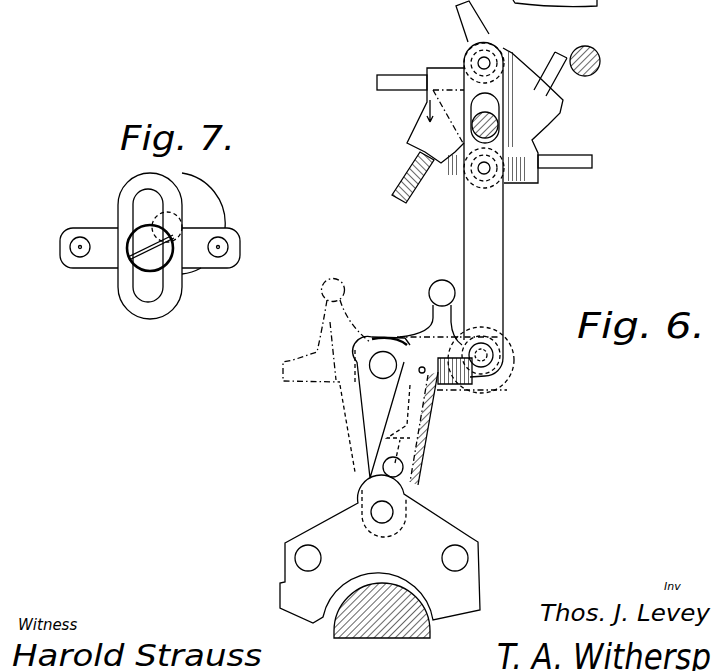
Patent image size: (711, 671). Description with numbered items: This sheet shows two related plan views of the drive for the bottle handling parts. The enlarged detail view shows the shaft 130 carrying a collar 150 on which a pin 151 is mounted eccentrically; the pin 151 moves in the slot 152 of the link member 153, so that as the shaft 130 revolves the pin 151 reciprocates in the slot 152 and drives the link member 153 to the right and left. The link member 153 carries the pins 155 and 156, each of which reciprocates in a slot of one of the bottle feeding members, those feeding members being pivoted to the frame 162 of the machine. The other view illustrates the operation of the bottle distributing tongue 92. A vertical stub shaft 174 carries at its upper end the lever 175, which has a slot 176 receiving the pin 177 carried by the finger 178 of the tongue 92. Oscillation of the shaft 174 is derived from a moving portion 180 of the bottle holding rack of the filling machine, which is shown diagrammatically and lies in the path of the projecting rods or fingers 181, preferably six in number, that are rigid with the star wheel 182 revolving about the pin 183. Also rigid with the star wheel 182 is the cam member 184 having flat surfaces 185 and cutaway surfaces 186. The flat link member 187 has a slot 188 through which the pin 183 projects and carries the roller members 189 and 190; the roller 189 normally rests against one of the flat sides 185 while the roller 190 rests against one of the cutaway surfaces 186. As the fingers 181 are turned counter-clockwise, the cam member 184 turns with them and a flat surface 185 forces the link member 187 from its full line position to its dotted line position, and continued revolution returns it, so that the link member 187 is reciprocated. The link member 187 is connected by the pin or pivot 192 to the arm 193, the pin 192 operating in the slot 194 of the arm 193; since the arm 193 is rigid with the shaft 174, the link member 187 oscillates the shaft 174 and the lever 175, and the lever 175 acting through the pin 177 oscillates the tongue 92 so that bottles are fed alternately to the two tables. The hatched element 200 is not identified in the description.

In FIG. 6, the distributing tongue 92 is at (437, 302).
In FIG. 7, the shaft 130 is at (163, 222).
In FIG. 7, the collar 150 is at (200, 207).
In FIG. 7, the pin 151 is at (147, 257).
In FIG. 7, the slot 152 is at (163, 200).
In FIG. 7, the link member 153 is at (128, 207).
In FIG. 7, the pin 155 is at (80, 243).
In FIG. 7, the pin 156 is at (218, 247).
In FIG. 6, the frame 162 is at (455, 585).
In FIG. 6, the vertical stub shaft 174 is at (383, 370).
In FIG. 6, the lever 175 is at (370, 415).
In FIG. 6, the slot 176 is at (410, 443).
In FIG. 6, the pin 177 is at (402, 476).
In FIG. 6, the finger 178 is at (430, 413).
In FIG. 6, the moving portion of the bottle holding rack 180 is at (598, 52).
In FIG. 6, the projecting rods or fingers 181 is at (553, 63).
In FIG. 6, the star wheel 182 is at (535, 125).
In FIG. 6, the pin 183 is at (490, 118).
In FIG. 6, the cam member 184 is at (452, 138).
In FIG. 6, the flat surfaces 185 is at (440, 166).
In FIG. 6, the cutaway surfaces 186 is at (425, 148).
In FIG. 6, the flat link member 187 is at (483, 270).
In FIG. 6, the slot 188 is at (522, 160).
In FIG. 6, the roller member 189 is at (508, 197).
In FIG. 6, the roller member 190 is at (466, 50).
In FIG. 6, the pin or pivot 192 is at (503, 360).
In FIG. 6, the arm 193 is at (503, 348).
In FIG. 6, the slot 194 is at (460, 352).
In FIG. 6, the shaft 200 is at (365, 627).